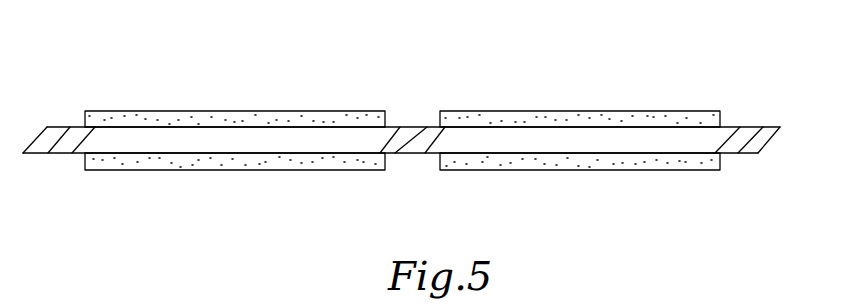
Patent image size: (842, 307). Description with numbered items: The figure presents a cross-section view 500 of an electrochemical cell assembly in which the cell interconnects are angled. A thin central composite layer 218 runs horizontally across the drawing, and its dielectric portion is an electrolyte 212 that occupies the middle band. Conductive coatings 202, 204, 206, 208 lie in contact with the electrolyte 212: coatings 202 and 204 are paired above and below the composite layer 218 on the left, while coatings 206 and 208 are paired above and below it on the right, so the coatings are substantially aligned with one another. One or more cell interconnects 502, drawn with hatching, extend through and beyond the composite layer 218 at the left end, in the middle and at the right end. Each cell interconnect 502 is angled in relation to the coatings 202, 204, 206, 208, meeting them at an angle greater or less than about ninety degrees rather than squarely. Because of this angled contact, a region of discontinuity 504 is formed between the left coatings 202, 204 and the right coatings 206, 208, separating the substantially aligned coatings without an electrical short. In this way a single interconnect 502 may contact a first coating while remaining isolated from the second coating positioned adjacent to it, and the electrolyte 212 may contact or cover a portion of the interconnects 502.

The cross-section view 500 is at (742, 53).
The coating 202 is at (186, 111).
The coating 204 is at (191, 170).
The coating 206 is at (563, 111).
The coating 208 is at (573, 170).
The electrolyte 212 is at (275, 143).
The composite layer 218 is at (790, 128).
The cell interconnect 502 is at (46, 154).
The region of discontinuity 504 is at (414, 115).